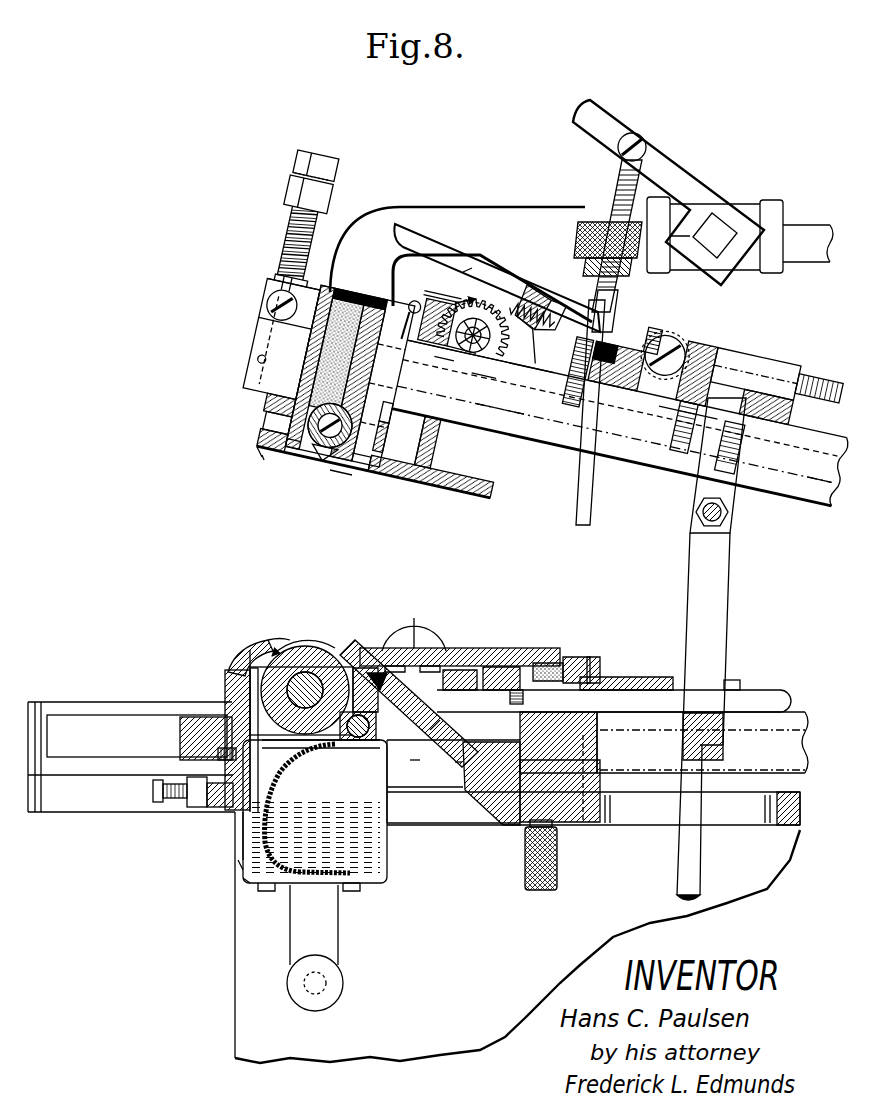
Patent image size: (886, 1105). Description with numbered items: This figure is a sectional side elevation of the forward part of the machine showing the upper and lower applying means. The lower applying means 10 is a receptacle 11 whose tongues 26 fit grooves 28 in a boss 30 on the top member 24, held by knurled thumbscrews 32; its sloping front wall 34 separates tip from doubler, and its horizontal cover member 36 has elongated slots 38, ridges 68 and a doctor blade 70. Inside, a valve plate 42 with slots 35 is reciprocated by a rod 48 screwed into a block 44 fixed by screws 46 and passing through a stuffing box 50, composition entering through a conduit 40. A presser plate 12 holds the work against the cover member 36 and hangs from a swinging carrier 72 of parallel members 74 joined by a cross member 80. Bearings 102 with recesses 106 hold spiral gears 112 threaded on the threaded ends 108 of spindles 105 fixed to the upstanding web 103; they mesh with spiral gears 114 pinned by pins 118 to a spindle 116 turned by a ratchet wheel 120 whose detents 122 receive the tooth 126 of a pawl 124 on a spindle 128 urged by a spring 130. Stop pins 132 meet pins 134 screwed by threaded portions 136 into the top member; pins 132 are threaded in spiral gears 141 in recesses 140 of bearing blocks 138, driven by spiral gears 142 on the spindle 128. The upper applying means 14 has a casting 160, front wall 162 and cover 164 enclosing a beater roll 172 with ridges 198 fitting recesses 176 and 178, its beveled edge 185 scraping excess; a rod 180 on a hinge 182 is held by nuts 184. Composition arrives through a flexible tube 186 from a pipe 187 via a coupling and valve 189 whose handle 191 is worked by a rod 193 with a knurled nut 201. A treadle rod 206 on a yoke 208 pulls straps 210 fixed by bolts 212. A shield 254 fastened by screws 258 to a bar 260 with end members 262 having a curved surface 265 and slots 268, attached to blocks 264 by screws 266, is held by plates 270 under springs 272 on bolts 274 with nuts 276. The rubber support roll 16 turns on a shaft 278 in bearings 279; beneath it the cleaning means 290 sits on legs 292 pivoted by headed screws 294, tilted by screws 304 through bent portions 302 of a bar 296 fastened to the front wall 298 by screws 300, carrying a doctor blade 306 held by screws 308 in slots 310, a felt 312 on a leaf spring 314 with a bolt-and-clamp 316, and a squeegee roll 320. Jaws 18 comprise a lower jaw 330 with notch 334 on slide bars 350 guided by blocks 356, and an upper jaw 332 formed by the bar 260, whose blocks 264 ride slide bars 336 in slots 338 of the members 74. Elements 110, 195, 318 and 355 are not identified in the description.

The applying means 10 is at (475, 795).
The receptacle 11 is at (590, 740).
The presser plate 12 is at (457, 486).
The applying means 14 is at (341, 478).
The support 16 is at (238, 672).
The jaws 18 is at (262, 460).
The top member 24 is at (780, 826).
The tongues 26 is at (457, 764).
The grooves 28 is at (490, 790).
The boss 30 is at (601, 780).
The knurled thumbscrews 32 is at (557, 870).
The sloping front wall 34 is at (371, 726).
The elongated slots 35 is at (383, 688).
The horizontal cover member 36 is at (473, 656).
The elongated slots 38 is at (414, 625).
The conduit 40 is at (732, 682).
The valve plate 42 is at (510, 667).
The block 44 is at (548, 664).
The screws 46 is at (525, 700).
The rod 48 is at (765, 700).
The stuffing box 50 is at (613, 680).
The ridges 68 is at (422, 652).
The doctor blade 70 is at (345, 652).
The swinging carrier 72 is at (574, 462).
The parallel spaced members 74 is at (668, 468).
The cross member 80 is at (752, 366).
The bearings 102 is at (478, 372).
The upstanding vertical web 103 is at (413, 446).
The spindle 105 is at (412, 376).
The recess 106 is at (481, 323).
The threaded ends 108 is at (467, 250).
The body lower 110 is at (459, 378).
The spiral gears 112 is at (437, 300).
The spiral gears 114 is at (518, 350).
The spindle 116 is at (466, 352).
The pins 118 is at (522, 332).
The ratchet wheel 120 is at (471, 271).
The detents 122 is at (529, 282).
The pawl 124 is at (536, 284).
The tooth 126 is at (506, 276).
The spindle 128 is at (666, 352).
The spring 130 is at (613, 306).
The pins 132 is at (590, 508).
The pins 134 is at (593, 658).
The threaded portions 136 is at (583, 823).
The bearing blocks 138 is at (630, 338).
The recesses 140 is at (641, 330).
The spiral gears 141 is at (591, 388).
The spiral gears 142 is at (692, 344).
The casting 160 is at (360, 416).
The front wall 162 is at (301, 340).
The cover 164 is at (379, 296).
The beater roll 172 is at (351, 462).
The recess 176 is at (265, 440).
The recess 178 is at (362, 432).
The rod 180 is at (798, 378).
The hinge 182 is at (415, 298).
The nuts 184 is at (735, 346).
The beveled edge 185 is at (302, 446).
The flexible tube 186 is at (440, 206).
The pipe 187 is at (800, 225).
The combination coupling and valve 189 is at (735, 206).
The valve handle 191 is at (675, 159).
The rod 193 is at (621, 180).
The screw head 195 is at (633, 134).
The ridges 198 is at (331, 462).
The knurled nut 201 is at (586, 230).
The treadle rod 206 is at (670, 830).
The yoke 208 is at (726, 580).
The straps 210 is at (745, 458).
The bolts 212 is at (729, 512).
The shield 254 is at (290, 468).
The screws 258 is at (266, 425).
The bar 260 is at (268, 407).
The vertical end members 262 is at (264, 345).
The blocks 264 is at (268, 300).
The curved surface 265 is at (270, 292).
The screws 266 is at (268, 307).
The slots 268 is at (272, 325).
The plates 270 is at (275, 280).
The springs 272 is at (286, 218).
The bolts 274 is at (300, 161).
The nuts 276 is at (291, 190).
The shaft 278 is at (306, 654).
The bearings 279 is at (415, 760).
The cleaning means 290 is at (353, 895).
The legs 292 is at (291, 912).
The headed screws 294 is at (287, 983).
The bar 296 is at (238, 808).
The front wall 298 is at (243, 852).
The screws 300 is at (218, 806).
The outwardly-bent portions 302 is at (190, 777).
The screws 304 is at (154, 792).
The doctor blade 306 is at (230, 700).
The screws 308 is at (222, 753).
The slots 310 is at (200, 731).
The piece of felt 312 is at (280, 786).
The leaf spring 314 is at (246, 832).
The bolt-and-clamp 316 is at (248, 866).
The band 318 is at (290, 766).
The squeegee roll 320 is at (352, 742).
The lower jaw 330 is at (236, 661).
The upper jaw 332 is at (256, 452).
The notched portion 334 is at (246, 648).
The slide bars 336 is at (513, 426).
The slots 338 is at (480, 426).
The slide bars 350 is at (804, 742).
The arm end 355 is at (42, 704).
The blocks 356 is at (82, 715).